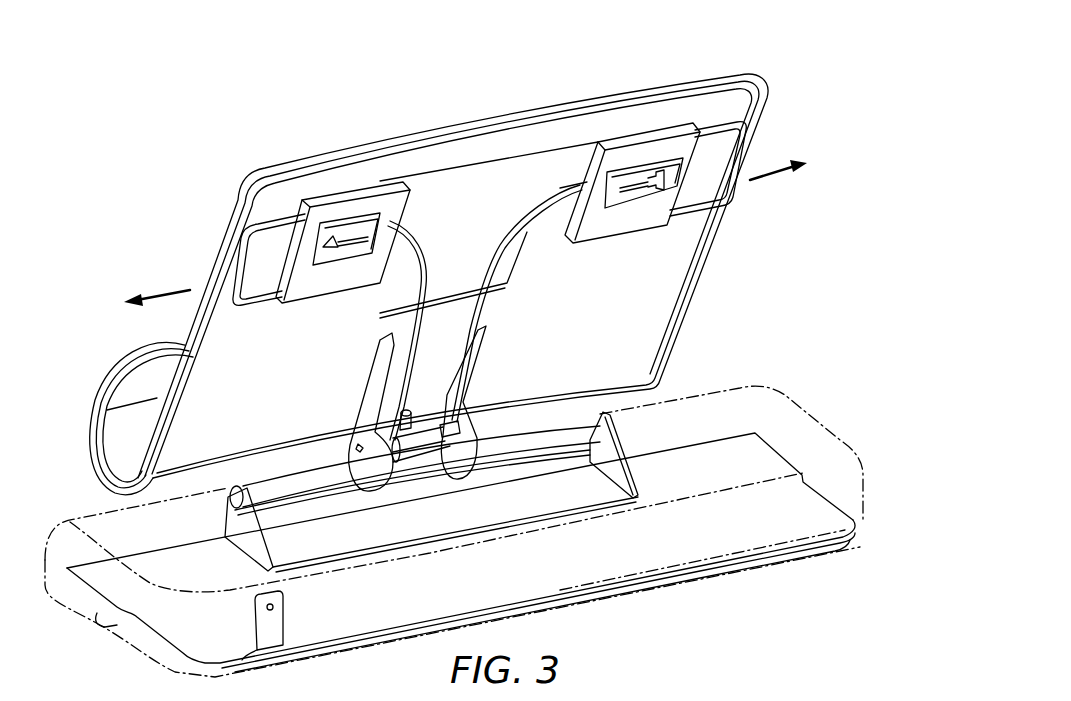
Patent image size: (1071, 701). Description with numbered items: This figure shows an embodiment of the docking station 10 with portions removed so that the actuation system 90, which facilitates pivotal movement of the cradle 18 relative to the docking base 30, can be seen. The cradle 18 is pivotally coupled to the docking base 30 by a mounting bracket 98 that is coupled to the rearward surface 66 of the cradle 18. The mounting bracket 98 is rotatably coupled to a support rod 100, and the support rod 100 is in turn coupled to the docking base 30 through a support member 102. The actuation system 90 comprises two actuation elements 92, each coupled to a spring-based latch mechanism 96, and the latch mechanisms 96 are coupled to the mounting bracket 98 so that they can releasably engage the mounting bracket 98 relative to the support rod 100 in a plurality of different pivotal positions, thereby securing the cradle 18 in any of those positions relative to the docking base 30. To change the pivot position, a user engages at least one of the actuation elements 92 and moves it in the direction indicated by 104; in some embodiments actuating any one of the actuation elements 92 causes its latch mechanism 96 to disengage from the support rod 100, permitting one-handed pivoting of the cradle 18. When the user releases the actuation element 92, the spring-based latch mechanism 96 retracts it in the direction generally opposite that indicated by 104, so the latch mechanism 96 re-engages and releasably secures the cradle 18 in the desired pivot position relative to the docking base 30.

The docking station 10 is at (454, 351).
The cradle 18 is at (699, 296).
The docking base 30 is at (825, 428).
The rearward surface 66 is at (711, 106).
The actuation system 90 is at (326, 384).
The actuation element 92 is at (748, 153).
The spring-based latch mechanism 96 is at (402, 324).
The mounting bracket 98 is at (478, 356).
The support rod 100 is at (608, 418).
The support member 102 is at (232, 523).
The actuation direction 104 is at (771, 184).